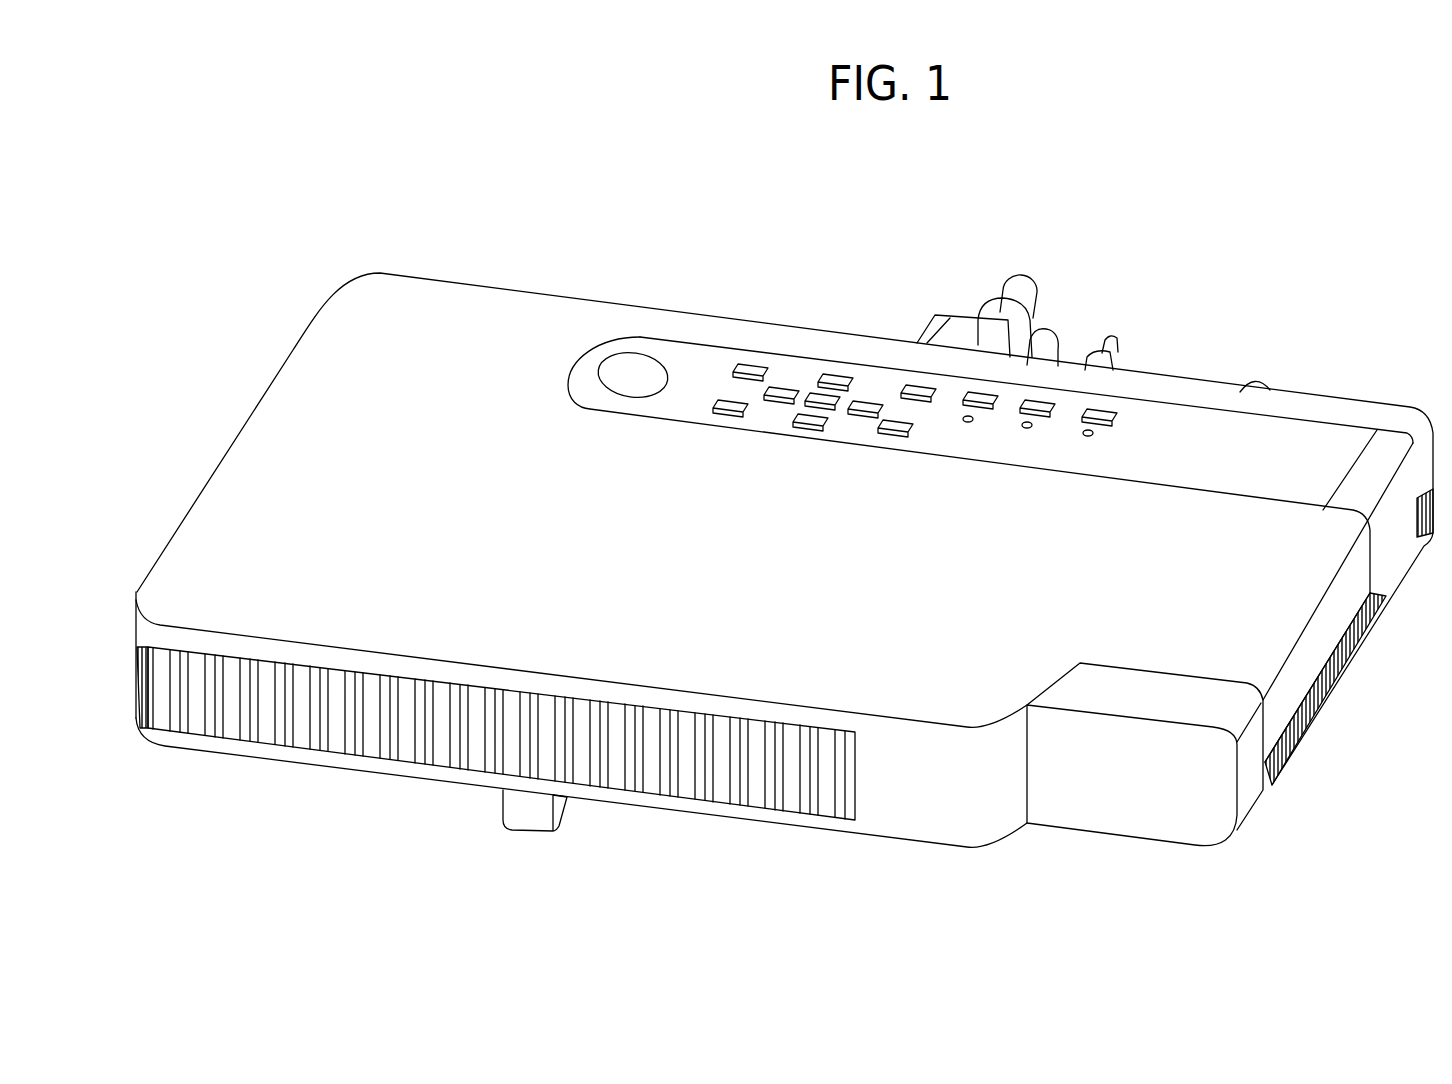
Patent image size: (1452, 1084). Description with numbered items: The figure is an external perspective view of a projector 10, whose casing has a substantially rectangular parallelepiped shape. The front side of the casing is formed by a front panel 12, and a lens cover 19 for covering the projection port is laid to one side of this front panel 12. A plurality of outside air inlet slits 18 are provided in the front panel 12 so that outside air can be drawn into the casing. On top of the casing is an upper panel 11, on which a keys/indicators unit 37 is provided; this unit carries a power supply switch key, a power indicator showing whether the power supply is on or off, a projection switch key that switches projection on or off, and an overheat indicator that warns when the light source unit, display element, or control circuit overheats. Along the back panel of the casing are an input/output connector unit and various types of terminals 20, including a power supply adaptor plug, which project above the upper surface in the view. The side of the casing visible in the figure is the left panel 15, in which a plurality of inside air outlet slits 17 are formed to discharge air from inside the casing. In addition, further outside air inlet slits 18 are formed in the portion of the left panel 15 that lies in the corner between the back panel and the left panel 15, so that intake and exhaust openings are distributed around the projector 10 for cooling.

The projector 10 is at (741, 236).
The upper panel 11 is at (528, 312).
The front panel 12 is at (906, 800).
The left panel 15 is at (1323, 630).
The inside air outlet slits 17 is at (1309, 723).
The outside air inlet slits 18 is at (783, 797).
The lens cover 19 is at (1177, 810).
The terminals 20 is at (1065, 278).
The keys/indicators unit 37 is at (839, 318).